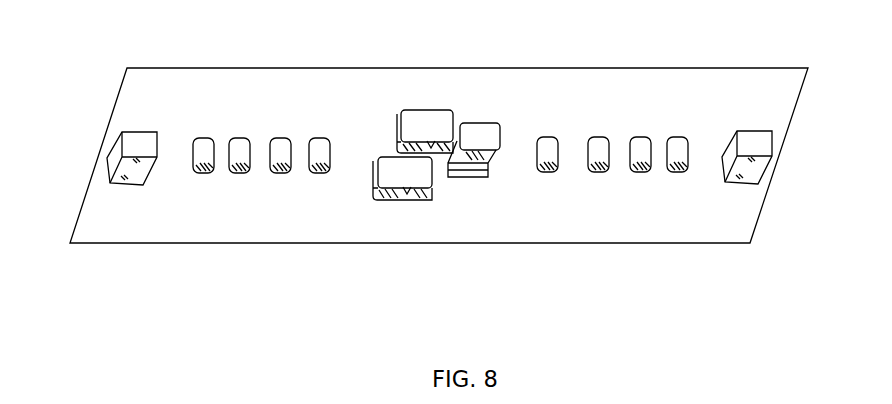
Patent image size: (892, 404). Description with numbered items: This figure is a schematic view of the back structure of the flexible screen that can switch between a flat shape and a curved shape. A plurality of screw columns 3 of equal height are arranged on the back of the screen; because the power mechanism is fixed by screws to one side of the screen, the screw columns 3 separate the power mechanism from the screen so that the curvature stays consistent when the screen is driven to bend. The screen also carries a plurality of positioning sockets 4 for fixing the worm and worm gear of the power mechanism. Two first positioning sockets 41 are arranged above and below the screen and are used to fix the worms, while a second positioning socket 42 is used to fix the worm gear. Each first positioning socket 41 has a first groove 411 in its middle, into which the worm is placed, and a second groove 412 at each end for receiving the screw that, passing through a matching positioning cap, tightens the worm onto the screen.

The screw column 3 is at (202, 142).
The positioning socket 4 is at (528, 28).
The first positioning socket 41 is at (420, 127).
The second positioning socket 42 is at (478, 135).
The first groove 411 is at (410, 198).
The second groove 412 is at (403, 190).